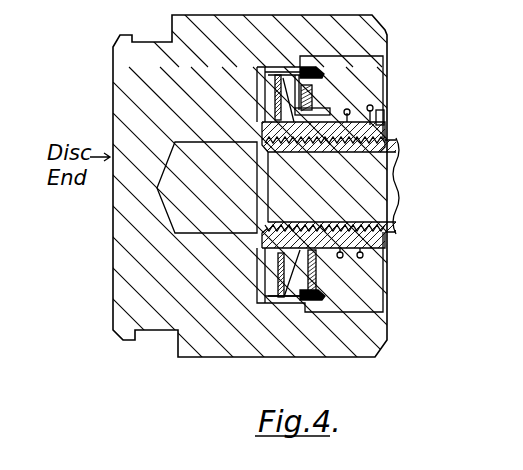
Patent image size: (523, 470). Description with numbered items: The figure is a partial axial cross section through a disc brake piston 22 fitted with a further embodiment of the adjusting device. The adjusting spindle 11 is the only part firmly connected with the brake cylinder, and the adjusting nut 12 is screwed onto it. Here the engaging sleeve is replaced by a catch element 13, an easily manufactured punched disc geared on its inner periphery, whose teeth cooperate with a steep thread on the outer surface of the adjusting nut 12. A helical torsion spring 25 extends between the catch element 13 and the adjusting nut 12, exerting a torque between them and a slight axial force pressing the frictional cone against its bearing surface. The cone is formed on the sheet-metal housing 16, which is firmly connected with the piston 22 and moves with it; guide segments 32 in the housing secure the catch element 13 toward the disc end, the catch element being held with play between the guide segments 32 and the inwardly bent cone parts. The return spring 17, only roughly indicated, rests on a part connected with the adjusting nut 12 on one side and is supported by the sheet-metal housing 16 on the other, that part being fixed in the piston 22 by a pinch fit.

The piston 22 is at (312, 340).
The return spring 17 is at (233, 185).
The adjusting spindle 11 is at (392, 182).
The adjusting nut 12 is at (393, 228).
The sheet-metal housing 16 is at (325, 76).
The guide segments 32 is at (322, 71).
The helical torsion spring 25 is at (375, 112).
The catch element 13 is at (320, 277).